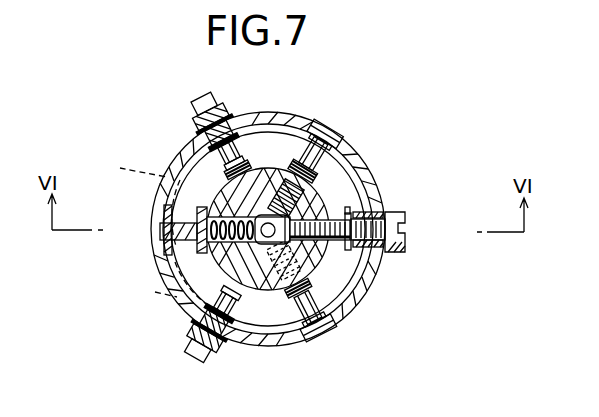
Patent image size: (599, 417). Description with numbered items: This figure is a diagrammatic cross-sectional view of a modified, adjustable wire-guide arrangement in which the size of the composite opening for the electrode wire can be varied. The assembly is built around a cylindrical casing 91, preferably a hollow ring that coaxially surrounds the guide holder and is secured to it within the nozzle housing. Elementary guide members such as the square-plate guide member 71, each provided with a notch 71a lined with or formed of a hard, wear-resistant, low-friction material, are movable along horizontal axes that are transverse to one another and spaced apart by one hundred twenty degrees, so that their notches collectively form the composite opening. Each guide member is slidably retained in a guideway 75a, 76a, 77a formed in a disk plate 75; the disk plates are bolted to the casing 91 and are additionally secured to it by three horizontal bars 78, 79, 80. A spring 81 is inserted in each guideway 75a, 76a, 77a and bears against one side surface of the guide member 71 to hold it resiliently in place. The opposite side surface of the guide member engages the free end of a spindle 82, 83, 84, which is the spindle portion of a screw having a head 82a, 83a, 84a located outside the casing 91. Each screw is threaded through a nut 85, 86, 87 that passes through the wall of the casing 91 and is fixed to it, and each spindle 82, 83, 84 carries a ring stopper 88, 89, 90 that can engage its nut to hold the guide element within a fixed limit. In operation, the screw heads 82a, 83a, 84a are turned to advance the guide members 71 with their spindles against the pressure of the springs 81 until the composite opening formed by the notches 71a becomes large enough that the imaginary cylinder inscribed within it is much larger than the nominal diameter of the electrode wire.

The elementary guide member 71 is at (249, 172).
The notch 71a is at (243, 290).
The disk plate 75 is at (180, 182).
The guideway 75a is at (353, 287).
The guideway 76a is at (128, 198).
The guideway 77a is at (165, 286).
The horizontal bar 78 is at (160, 208).
The horizontal bar 79 is at (337, 327).
The horizontal bar 80 is at (335, 160).
The spring 81 is at (347, 170).
The spindle 82 is at (350, 210).
The screw head 82a is at (407, 215).
The spindle 83 is at (207, 158).
The screw head 83a is at (219, 103).
The spindle 84 is at (180, 310).
The screw head 84a is at (185, 348).
The nut 85 is at (370, 262).
The nut 86 is at (207, 133).
The nut 87 is at (240, 353).
The ring stopper 88 is at (383, 207).
The ring stopper 89 is at (243, 128).
The ring stopper 90 is at (247, 343).
The cylindrical casing 91 is at (318, 125).